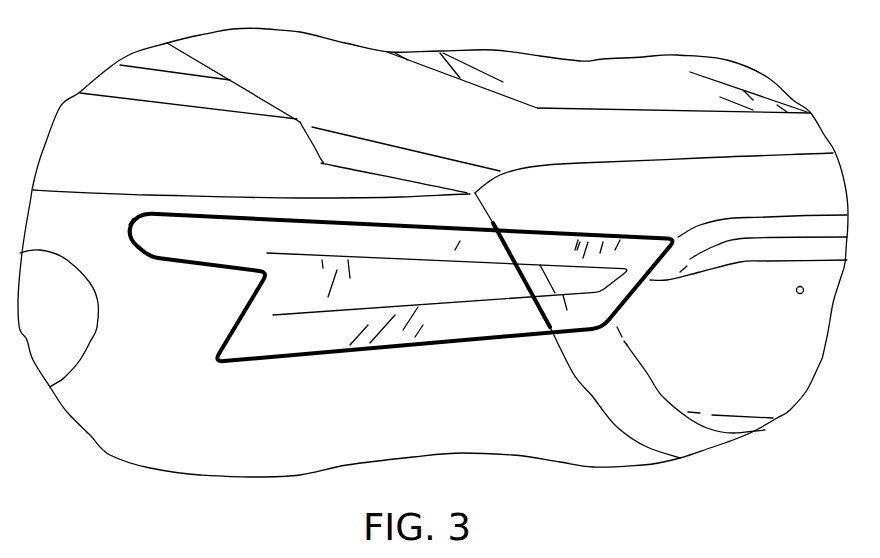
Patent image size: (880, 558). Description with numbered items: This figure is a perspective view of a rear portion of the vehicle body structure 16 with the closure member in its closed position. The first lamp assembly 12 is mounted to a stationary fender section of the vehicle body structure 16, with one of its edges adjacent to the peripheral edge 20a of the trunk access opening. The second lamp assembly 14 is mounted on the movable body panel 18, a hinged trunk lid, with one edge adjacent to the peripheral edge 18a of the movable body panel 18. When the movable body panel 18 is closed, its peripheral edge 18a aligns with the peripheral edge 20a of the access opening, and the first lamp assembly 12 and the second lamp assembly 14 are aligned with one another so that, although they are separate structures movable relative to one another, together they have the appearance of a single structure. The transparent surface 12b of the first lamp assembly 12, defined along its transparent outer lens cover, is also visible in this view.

The first lamp assembly 12 is at (305, 238).
The transparent surface 12b is at (310, 333).
The second lamp assembly 14 is at (557, 250).
The vehicle body structure 16 is at (143, 100).
The movable body panel 18 is at (605, 87).
The peripheral edge 18a is at (577, 372).
The peripheral edge 20a is at (595, 397).